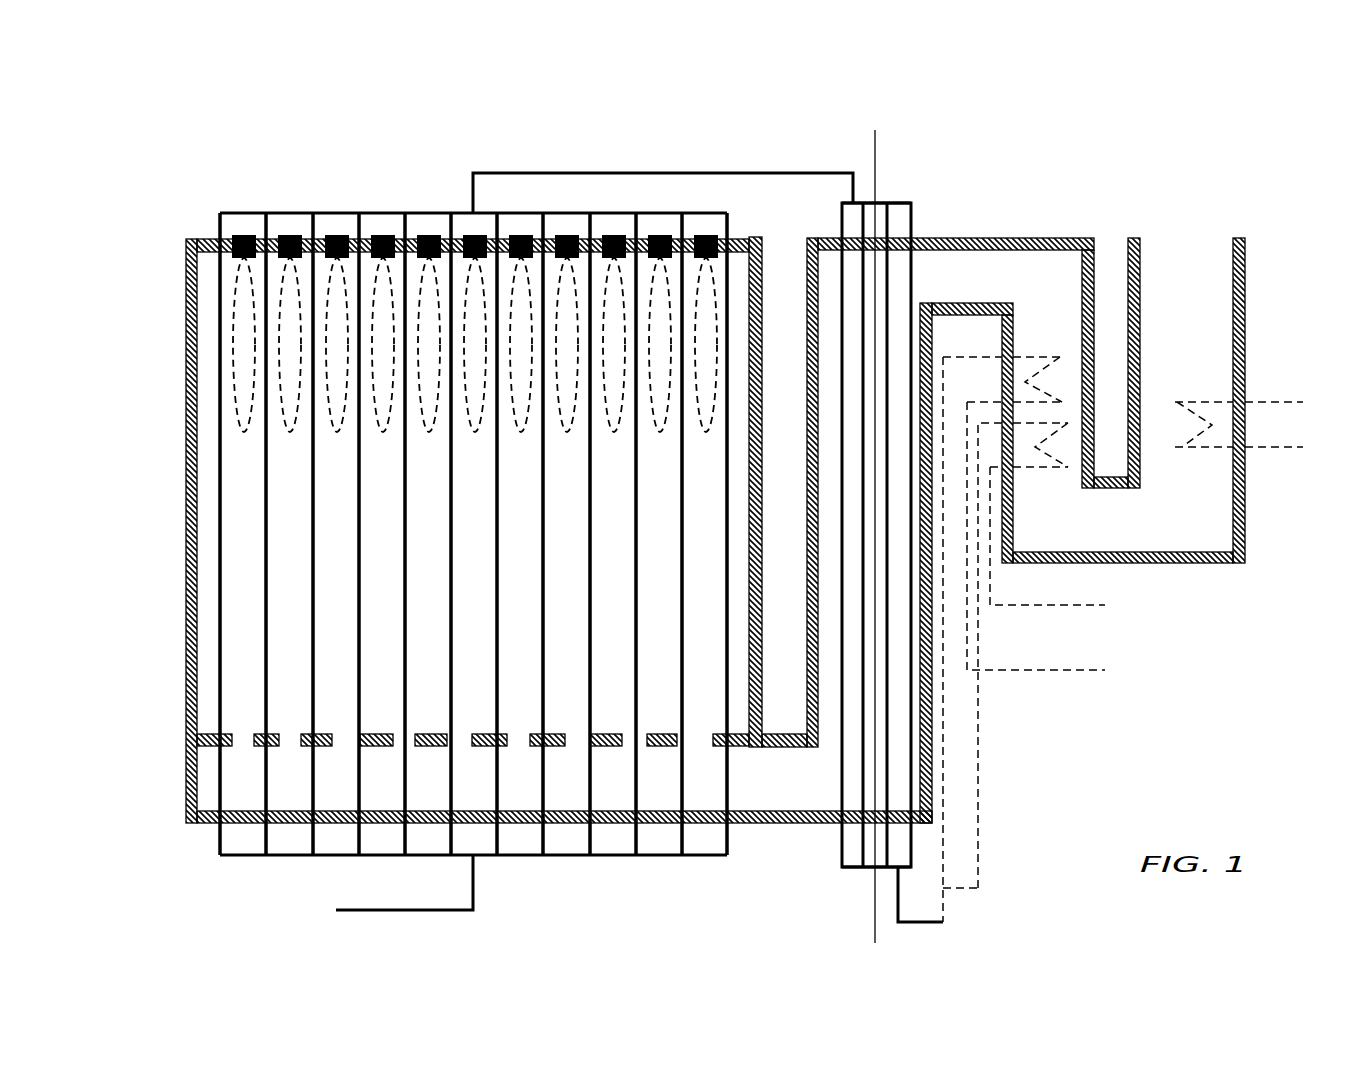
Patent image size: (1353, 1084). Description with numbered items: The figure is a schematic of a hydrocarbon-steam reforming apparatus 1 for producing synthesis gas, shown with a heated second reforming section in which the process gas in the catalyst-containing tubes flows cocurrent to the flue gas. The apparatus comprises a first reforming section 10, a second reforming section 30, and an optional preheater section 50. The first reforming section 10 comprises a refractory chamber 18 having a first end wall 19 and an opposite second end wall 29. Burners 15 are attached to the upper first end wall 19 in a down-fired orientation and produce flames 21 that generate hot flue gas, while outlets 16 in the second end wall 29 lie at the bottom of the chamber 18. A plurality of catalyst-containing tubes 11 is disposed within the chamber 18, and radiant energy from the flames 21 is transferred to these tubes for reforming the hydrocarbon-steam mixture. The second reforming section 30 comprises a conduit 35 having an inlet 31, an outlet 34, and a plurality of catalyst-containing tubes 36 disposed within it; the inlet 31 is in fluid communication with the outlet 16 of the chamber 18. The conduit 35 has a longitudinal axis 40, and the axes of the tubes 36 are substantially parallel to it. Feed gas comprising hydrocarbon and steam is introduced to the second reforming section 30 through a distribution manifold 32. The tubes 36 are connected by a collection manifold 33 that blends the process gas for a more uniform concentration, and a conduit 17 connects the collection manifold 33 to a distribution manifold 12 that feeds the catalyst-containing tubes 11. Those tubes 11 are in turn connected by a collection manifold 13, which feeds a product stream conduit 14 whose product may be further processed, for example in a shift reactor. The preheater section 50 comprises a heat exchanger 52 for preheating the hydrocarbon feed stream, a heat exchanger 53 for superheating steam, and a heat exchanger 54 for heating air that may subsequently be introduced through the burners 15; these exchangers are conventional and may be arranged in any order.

The hydrocarbon-steam reforming apparatus 1 is at (148, 148).
The first reforming section 10 is at (765, 137).
The catalyst-containing tubes 11 is at (312, 533).
The distribution manifold 12 is at (393, 213).
The collection manifold 13 is at (565, 858).
The product stream conduit 14 is at (427, 911).
The burner 15 is at (372, 240).
The outlet 16 is at (290, 743).
The conduit 17 is at (680, 172).
The chamber 18 is at (187, 437).
The first end wall 19 is at (210, 240).
The flames 21 is at (277, 362).
The second end wall 29 is at (207, 750).
The second reforming section 30 is at (945, 135).
The inlet 31 is at (810, 783).
The distribution manifold 32 is at (848, 868).
The collection manifold 33 is at (898, 203).
The outlet 34 is at (932, 282).
The conduit 35 is at (933, 672).
The catalyst-containing tubes 36 is at (840, 390).
The longitudinal axis 40 is at (873, 510).
The preheater section 50 is at (1245, 137).
The heat exchanger 52 is at (1040, 385).
The heat exchanger 53 is at (1048, 450).
The heat exchanger 54 is at (1200, 433).